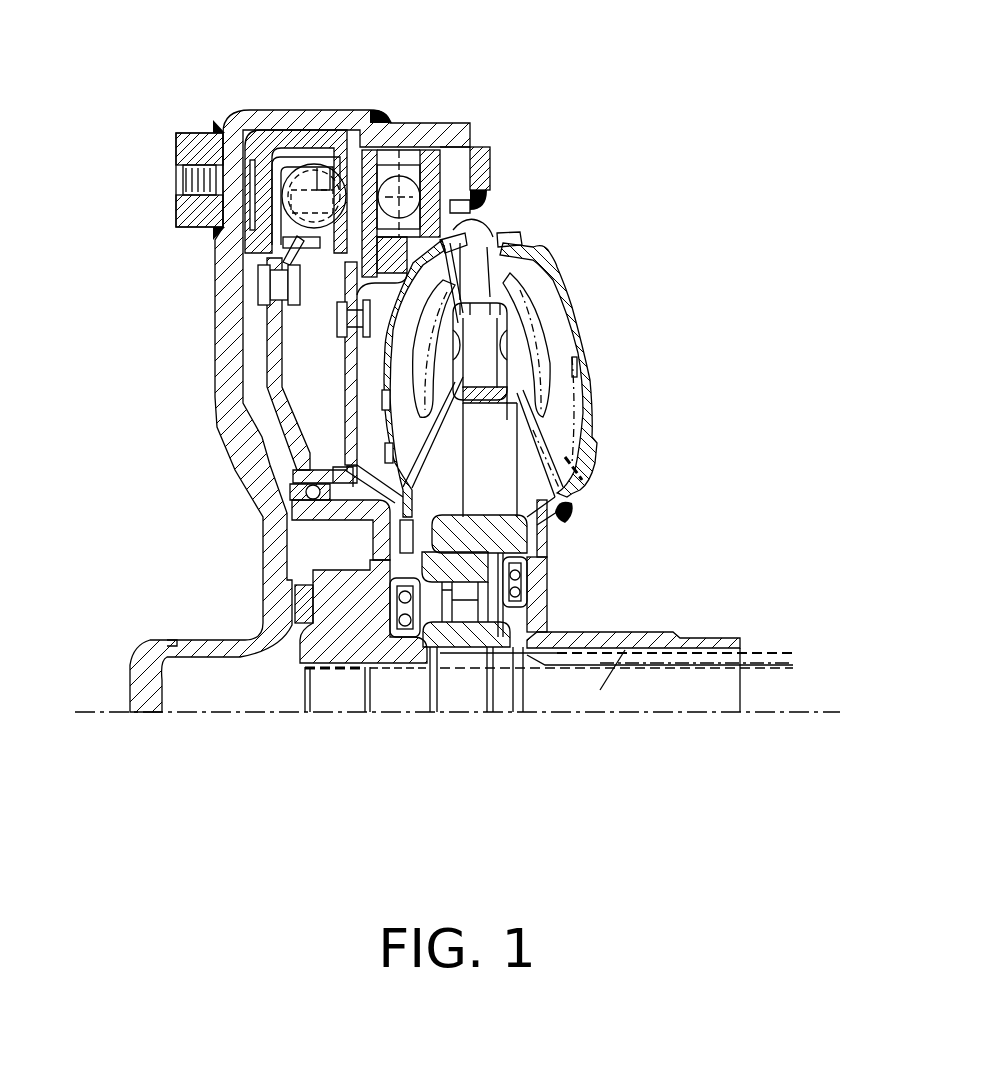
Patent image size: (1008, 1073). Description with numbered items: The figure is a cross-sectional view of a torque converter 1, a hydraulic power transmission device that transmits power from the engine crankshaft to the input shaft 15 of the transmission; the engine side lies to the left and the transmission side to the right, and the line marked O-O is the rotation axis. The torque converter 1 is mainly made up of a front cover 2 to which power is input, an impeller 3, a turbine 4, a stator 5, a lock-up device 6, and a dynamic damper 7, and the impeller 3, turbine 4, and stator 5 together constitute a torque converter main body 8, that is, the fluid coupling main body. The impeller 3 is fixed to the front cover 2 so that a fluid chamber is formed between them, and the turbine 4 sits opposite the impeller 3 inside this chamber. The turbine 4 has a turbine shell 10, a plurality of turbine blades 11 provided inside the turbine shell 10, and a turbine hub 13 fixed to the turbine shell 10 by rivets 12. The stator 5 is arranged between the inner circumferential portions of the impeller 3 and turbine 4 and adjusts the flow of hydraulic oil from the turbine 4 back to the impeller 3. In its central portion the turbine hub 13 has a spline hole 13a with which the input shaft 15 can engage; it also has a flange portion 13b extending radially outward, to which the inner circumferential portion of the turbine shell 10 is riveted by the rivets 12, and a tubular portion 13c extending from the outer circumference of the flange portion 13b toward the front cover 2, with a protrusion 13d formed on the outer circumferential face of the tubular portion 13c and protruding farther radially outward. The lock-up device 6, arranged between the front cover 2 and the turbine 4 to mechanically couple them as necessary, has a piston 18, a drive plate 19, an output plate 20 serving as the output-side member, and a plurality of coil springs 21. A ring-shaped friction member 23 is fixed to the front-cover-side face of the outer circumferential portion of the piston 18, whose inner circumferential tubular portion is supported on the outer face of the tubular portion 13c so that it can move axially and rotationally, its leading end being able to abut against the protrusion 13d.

The torque converter 1 is at (170, 95).
The front cover 2 is at (223, 293).
The impeller 3 is at (573, 240).
The turbine 4 is at (462, 228).
The stator 5 is at (522, 468).
The lock-up device 6 is at (255, 322).
The dynamic damper 7 is at (443, 160).
The torque converter main body 8 is at (565, 190).
The turbine shell 10 is at (492, 238).
The turbine blades 11 is at (440, 327).
The rivets 12 is at (387, 540).
The turbine hub 13 is at (295, 658).
The spline hole 13a is at (336, 672).
The flange portion 13b is at (387, 507).
The tubular portion 13c is at (347, 482).
The protrusion 13d is at (348, 443).
The input shaft 15 is at (570, 680).
The piston 18 is at (273, 353).
The drive plate 19 is at (287, 237).
The output plate 20 is at (360, 377).
The coil springs 21 is at (307, 173).
The friction member 23 is at (280, 177).